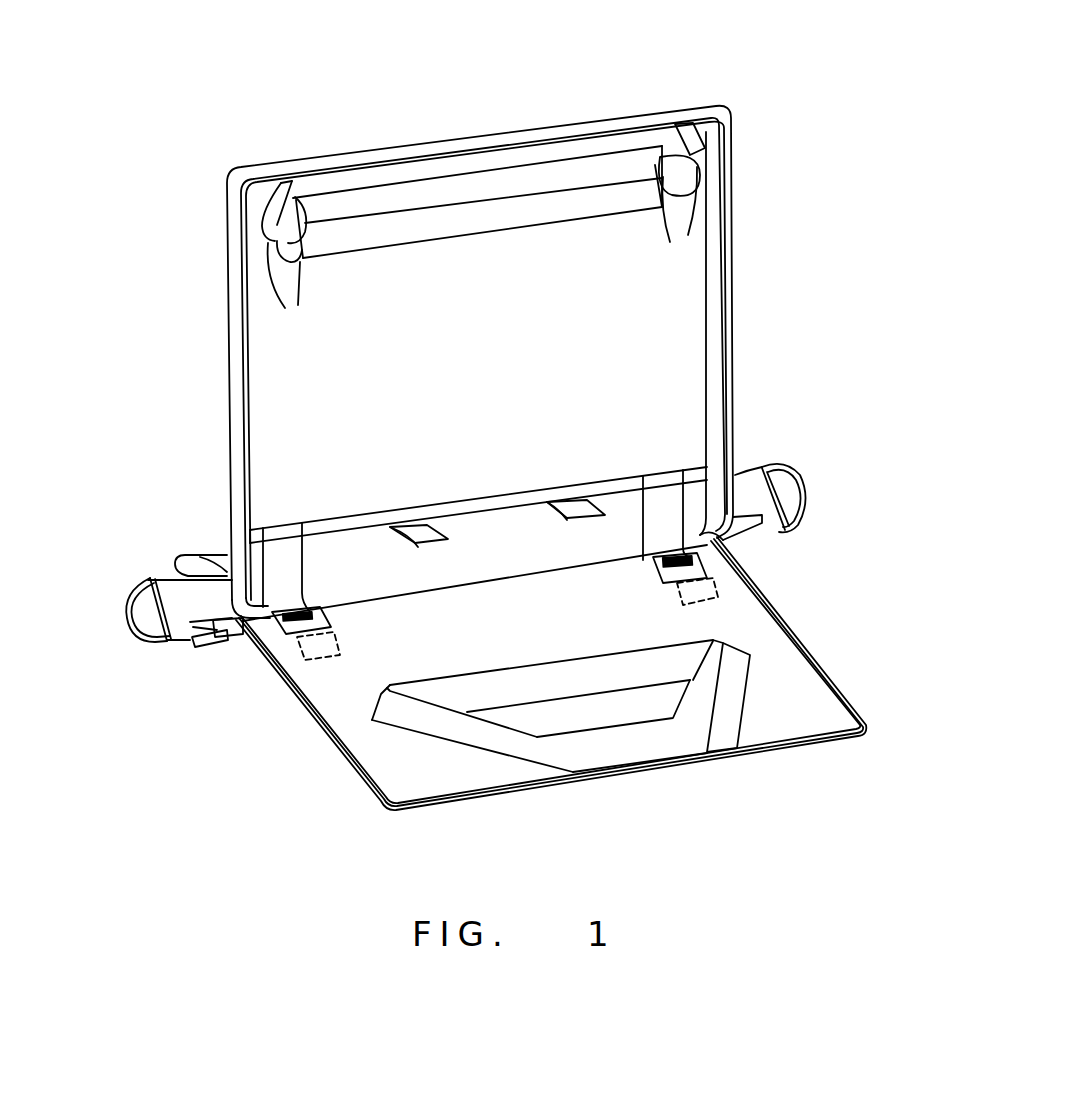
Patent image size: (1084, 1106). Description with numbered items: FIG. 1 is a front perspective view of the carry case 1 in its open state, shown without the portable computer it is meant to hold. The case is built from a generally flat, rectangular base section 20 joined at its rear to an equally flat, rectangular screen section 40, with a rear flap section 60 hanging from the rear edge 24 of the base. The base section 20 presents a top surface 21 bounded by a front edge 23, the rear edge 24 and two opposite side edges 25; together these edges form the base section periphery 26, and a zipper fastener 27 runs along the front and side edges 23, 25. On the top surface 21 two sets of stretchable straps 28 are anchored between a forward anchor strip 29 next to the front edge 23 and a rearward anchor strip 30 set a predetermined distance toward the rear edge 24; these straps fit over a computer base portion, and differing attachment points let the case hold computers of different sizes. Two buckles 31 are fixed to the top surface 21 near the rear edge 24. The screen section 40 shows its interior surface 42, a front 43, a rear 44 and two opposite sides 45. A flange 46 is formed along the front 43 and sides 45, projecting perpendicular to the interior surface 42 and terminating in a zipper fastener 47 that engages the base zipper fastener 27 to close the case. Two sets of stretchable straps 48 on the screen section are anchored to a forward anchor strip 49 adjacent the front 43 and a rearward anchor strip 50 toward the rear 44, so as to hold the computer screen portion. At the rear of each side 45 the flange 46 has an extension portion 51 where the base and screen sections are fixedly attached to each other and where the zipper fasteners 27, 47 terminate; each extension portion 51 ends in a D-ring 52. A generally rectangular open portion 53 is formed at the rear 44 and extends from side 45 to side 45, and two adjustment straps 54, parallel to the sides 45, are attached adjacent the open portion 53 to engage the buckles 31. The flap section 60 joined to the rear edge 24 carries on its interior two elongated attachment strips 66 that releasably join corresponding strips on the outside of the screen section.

The carry case 1 is at (733, 268).
The base section 20 is at (562, 706).
The top surface 21 is at (807, 695).
The front edge 23 is at (765, 753).
The rear edge 24 is at (455, 590).
The side edges 25 is at (772, 605).
The base section periphery 26 is at (452, 797).
The zipper fastener 27 is at (280, 678).
The stretchable straps 28 is at (515, 737).
The forward anchor strip 29 is at (618, 765).
The rearward anchor strip 30 is at (561, 745).
The buckles 31 is at (337, 640).
The screen section 40 is at (481, 337).
The interior surface 42 is at (628, 372).
The front 43 is at (477, 167).
The rear 44 is at (353, 517).
The opposite sides 45 is at (228, 412).
The flange 46 is at (237, 287).
The zipper fastener 47 is at (247, 372).
The stretchable straps 48 is at (484, 225).
The forward anchor strip 49 is at (368, 178).
The rearward anchor strip 50 is at (572, 212).
The extension portion 51 is at (180, 618).
The D-ring 52 is at (127, 597).
The open portion 53 is at (475, 522).
The adjustment straps 54 is at (288, 578).
The flap section 60 is at (530, 527).
The attachment strips 66 is at (417, 543).